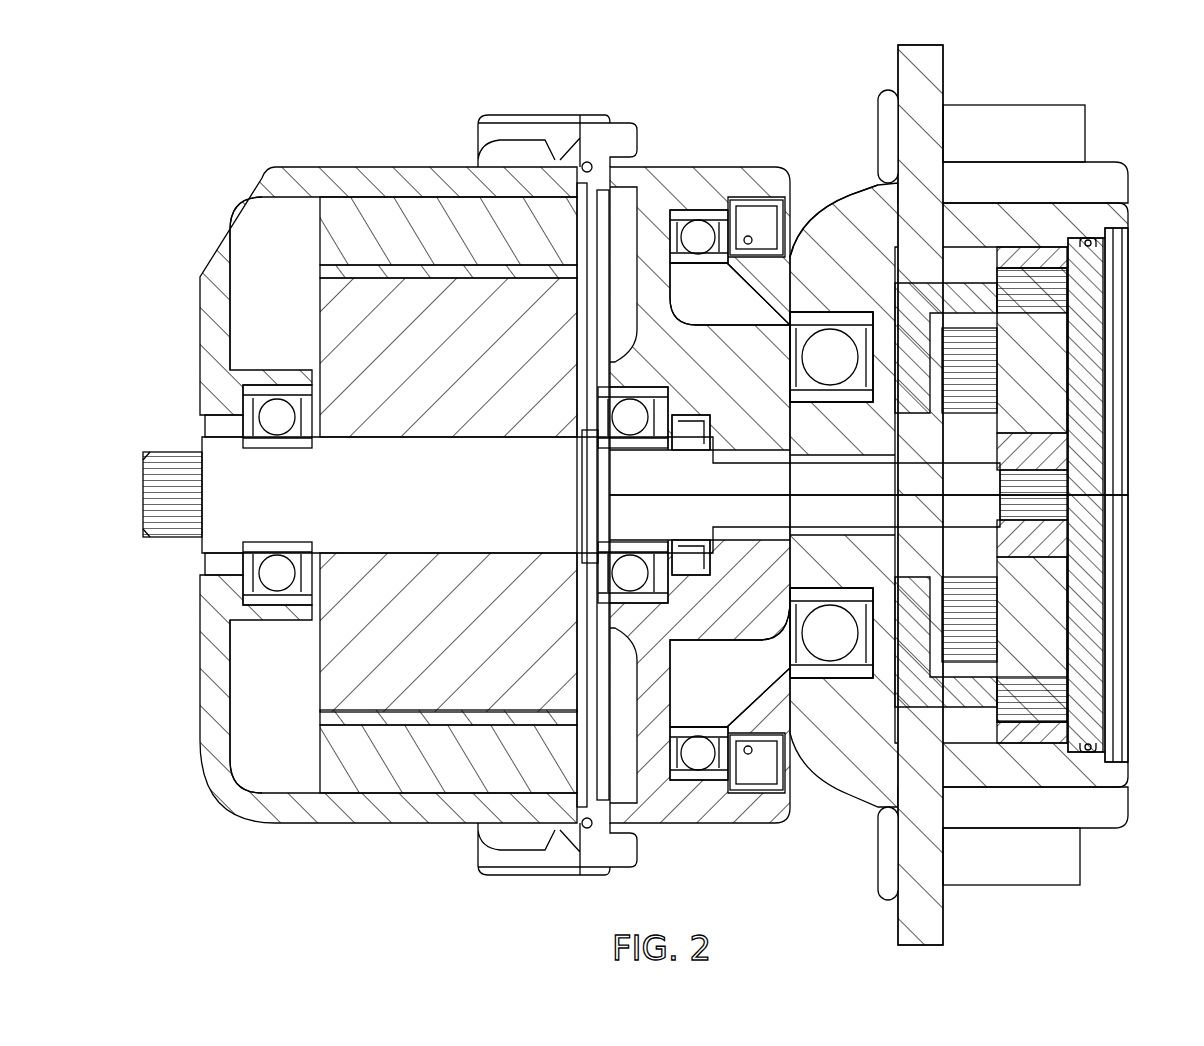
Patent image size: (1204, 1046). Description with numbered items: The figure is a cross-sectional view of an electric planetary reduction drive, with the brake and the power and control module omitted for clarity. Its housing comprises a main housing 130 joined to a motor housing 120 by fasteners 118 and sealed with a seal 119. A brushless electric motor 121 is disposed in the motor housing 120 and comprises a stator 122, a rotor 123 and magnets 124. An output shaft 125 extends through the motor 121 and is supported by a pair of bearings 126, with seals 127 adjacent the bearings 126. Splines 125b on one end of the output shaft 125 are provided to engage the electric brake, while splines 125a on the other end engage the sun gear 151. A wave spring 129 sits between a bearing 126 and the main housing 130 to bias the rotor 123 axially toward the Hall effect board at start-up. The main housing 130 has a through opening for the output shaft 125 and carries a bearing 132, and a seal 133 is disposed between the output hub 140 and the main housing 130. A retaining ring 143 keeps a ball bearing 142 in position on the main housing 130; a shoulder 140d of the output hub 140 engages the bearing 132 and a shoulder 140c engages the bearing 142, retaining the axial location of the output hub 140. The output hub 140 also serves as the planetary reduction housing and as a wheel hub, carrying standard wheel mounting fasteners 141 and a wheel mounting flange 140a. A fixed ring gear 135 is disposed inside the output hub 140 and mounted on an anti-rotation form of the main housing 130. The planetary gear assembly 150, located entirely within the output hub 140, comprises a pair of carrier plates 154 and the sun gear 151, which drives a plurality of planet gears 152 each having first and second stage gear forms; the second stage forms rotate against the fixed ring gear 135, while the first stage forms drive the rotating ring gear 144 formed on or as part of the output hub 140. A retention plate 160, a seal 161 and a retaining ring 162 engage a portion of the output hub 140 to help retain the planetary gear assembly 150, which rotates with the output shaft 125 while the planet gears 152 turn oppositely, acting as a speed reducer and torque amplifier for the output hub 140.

The fasteners 118 is at (625, 145).
The seal 119 is at (588, 162).
The motor housing 120 is at (272, 166).
The brushless electric motor 121 is at (300, 318).
The stator 122 is at (390, 210).
The rotor 123 is at (390, 425).
The magnets 124 is at (328, 716).
The output shaft 125 is at (475, 507).
The splines 125a is at (1060, 500).
The splines 125b is at (180, 540).
The bearings 126 is at (277, 560).
The seals 127 is at (212, 432).
The wave spring 129 is at (652, 452).
The main housing 130 is at (695, 825).
The bearing 132 is at (705, 230).
The seal 133 is at (748, 236).
The fixed ring gear 135 is at (870, 295).
The output hub 140 is at (870, 800).
The wheel mounting flange 140a is at (943, 912).
The shoulder 140c is at (842, 320).
The shoulder 140d is at (745, 262).
The wheel mounting fasteners 141 is at (1038, 146).
The ball bearing 142 is at (832, 368).
The retaining ring 143 is at (890, 410).
The rotating ring gear 144 is at (1040, 738).
The planetary gear assembly 150 is at (975, 490).
The sun gear 151 is at (1050, 450).
The planet gears 152 is at (1040, 385).
The carrier plates 154 is at (1060, 672).
The retention plate 160 is at (1095, 340).
The seal 161 is at (1090, 233).
The retaining ring 162 is at (1118, 245).